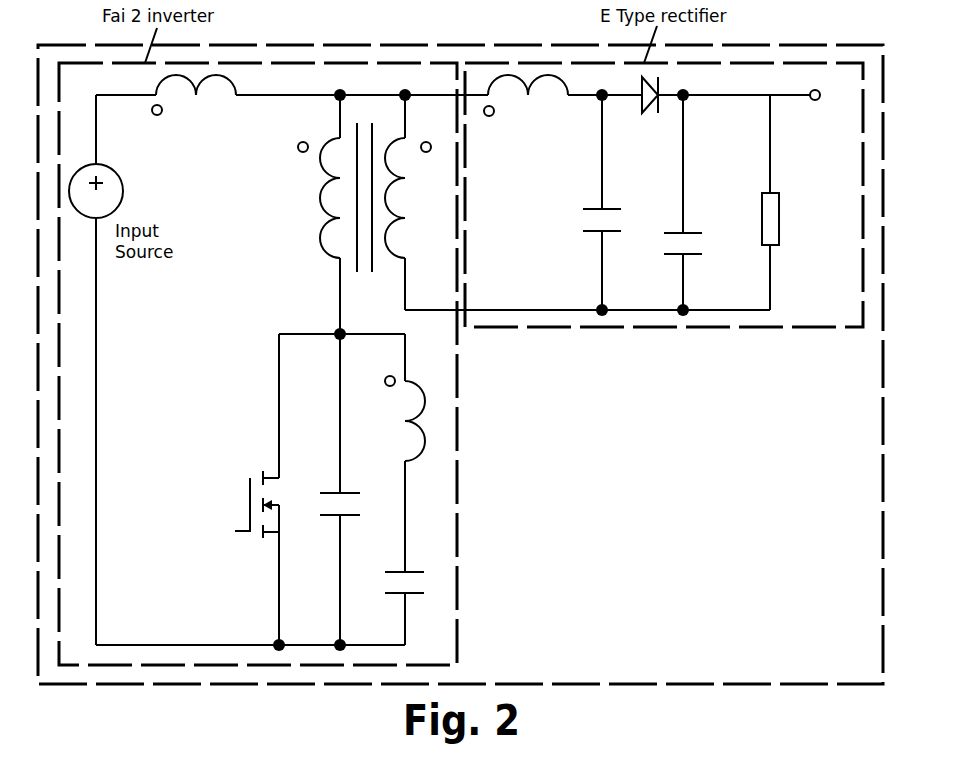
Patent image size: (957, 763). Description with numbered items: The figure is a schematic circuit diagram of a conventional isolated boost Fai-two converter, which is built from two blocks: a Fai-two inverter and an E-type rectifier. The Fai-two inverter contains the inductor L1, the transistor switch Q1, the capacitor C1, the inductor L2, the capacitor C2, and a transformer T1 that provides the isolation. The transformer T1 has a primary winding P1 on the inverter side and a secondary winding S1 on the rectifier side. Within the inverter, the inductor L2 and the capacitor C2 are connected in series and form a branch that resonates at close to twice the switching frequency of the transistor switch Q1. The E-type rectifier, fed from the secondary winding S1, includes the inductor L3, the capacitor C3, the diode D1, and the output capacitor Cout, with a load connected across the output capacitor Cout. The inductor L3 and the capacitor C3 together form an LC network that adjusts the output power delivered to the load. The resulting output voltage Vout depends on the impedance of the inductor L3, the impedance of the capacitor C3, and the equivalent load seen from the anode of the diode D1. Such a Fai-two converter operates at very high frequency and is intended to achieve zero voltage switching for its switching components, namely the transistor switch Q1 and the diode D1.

The inductor L1 is at (194, 101).
The transformer T1 is at (369, 214).
The primary winding P1 is at (313, 214).
The secondary winding S1 is at (411, 202).
The inductor L3 is at (526, 101).
The diode D1 is at (652, 108).
The capacitor C3 is at (610, 202).
The output capacitor Cout is at (700, 202).
The output voltage Vout is at (806, 121).
The transistor switch Q1 is at (256, 489).
The capacitor C1 is at (348, 489).
The inductor L2 is at (416, 397).
The capacitor C2 is at (413, 553).